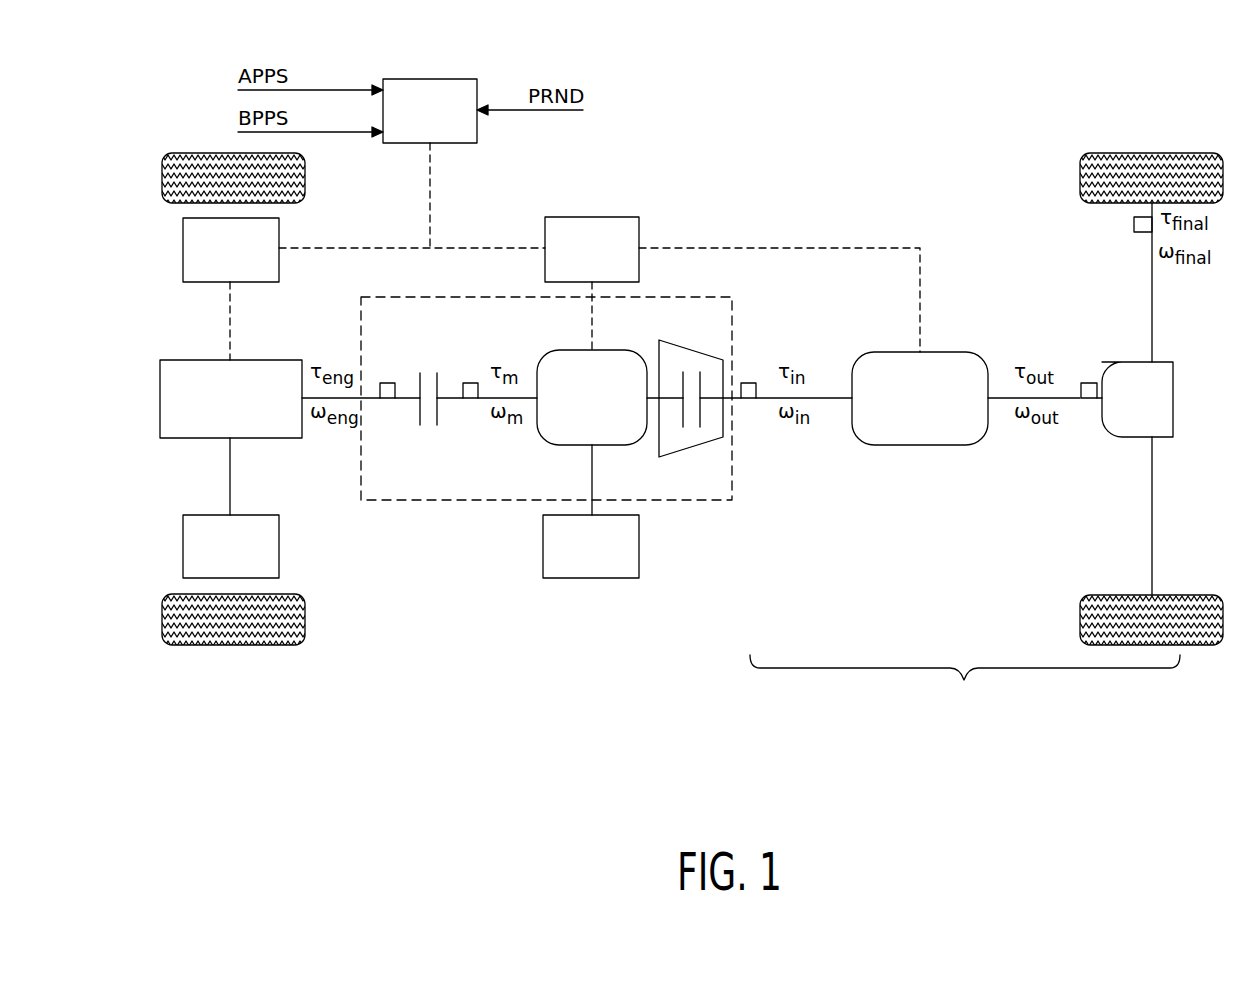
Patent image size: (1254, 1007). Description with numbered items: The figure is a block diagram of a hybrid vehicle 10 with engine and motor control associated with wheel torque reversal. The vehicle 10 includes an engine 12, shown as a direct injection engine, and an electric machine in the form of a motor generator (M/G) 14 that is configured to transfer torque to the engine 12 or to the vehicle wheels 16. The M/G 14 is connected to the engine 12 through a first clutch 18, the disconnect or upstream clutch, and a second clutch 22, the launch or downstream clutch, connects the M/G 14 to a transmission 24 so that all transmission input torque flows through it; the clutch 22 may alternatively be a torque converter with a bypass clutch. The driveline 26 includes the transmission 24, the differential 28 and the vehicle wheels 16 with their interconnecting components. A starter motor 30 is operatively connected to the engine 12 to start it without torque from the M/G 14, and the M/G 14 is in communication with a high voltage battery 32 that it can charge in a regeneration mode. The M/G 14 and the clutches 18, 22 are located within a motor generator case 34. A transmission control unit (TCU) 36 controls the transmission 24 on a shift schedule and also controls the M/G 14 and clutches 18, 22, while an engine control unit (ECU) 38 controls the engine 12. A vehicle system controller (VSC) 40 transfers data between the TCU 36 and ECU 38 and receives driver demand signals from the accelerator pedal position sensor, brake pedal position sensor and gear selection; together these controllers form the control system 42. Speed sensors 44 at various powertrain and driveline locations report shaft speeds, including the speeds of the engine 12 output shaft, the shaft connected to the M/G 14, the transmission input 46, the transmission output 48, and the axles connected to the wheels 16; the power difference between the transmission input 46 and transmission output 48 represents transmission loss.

The hybrid vehicle 10 is at (878, 88).
The engine 12 is at (160, 398).
The motor generator (M/G) 14 is at (607, 350).
The vehicle wheels 16 is at (1150, 153).
The first clutch 18 is at (418, 422).
The second clutch 22 is at (700, 415).
The transmission 24 is at (940, 352).
The driveline 26 is at (965, 460).
The differential 28 is at (1173, 400).
The starter motor 30 is at (183, 548).
The battery 32 is at (592, 578).
The motor generator case 34 is at (688, 500).
The transmission control unit (TCU) 36 is at (592, 217).
The engine control unit (ECU) 38 is at (183, 248).
The vehicle system controller (VSC) 40 is at (430, 79).
The control system 42 is at (615, 101).
The speed sensors 44 is at (386, 383).
The transmission input 46 is at (821, 398).
The transmission output 48 is at (1068, 402).